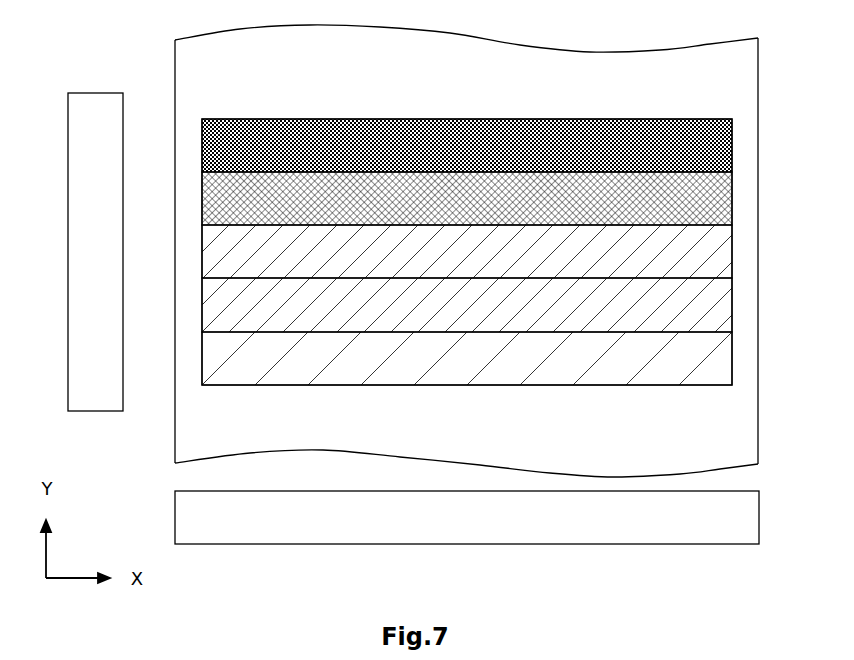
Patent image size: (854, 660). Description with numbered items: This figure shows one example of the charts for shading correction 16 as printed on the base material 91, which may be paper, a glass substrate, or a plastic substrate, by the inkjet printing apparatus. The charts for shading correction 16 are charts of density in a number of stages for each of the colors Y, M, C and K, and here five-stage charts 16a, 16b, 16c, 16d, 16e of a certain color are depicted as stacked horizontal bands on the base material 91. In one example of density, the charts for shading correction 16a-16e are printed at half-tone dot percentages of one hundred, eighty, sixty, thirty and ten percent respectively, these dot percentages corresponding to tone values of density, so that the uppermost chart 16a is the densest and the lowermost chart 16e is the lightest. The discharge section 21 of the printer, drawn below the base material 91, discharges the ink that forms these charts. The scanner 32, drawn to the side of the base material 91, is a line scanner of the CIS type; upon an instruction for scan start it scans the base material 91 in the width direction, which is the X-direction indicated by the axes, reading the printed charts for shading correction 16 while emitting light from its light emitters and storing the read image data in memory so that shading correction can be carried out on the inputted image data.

The base material 91 is at (750, 59).
The charts for shading correction 16 is at (680, 106).
The chart for shading correction 16a is at (733, 145).
The chart for shading correction 16b is at (733, 198).
The chart for shading correction 16c is at (733, 251).
The chart for shading correction 16d is at (733, 305).
The chart for shading correction 16e is at (733, 360).
The scanner 32 is at (97, 92).
The discharge section 21 is at (760, 515).